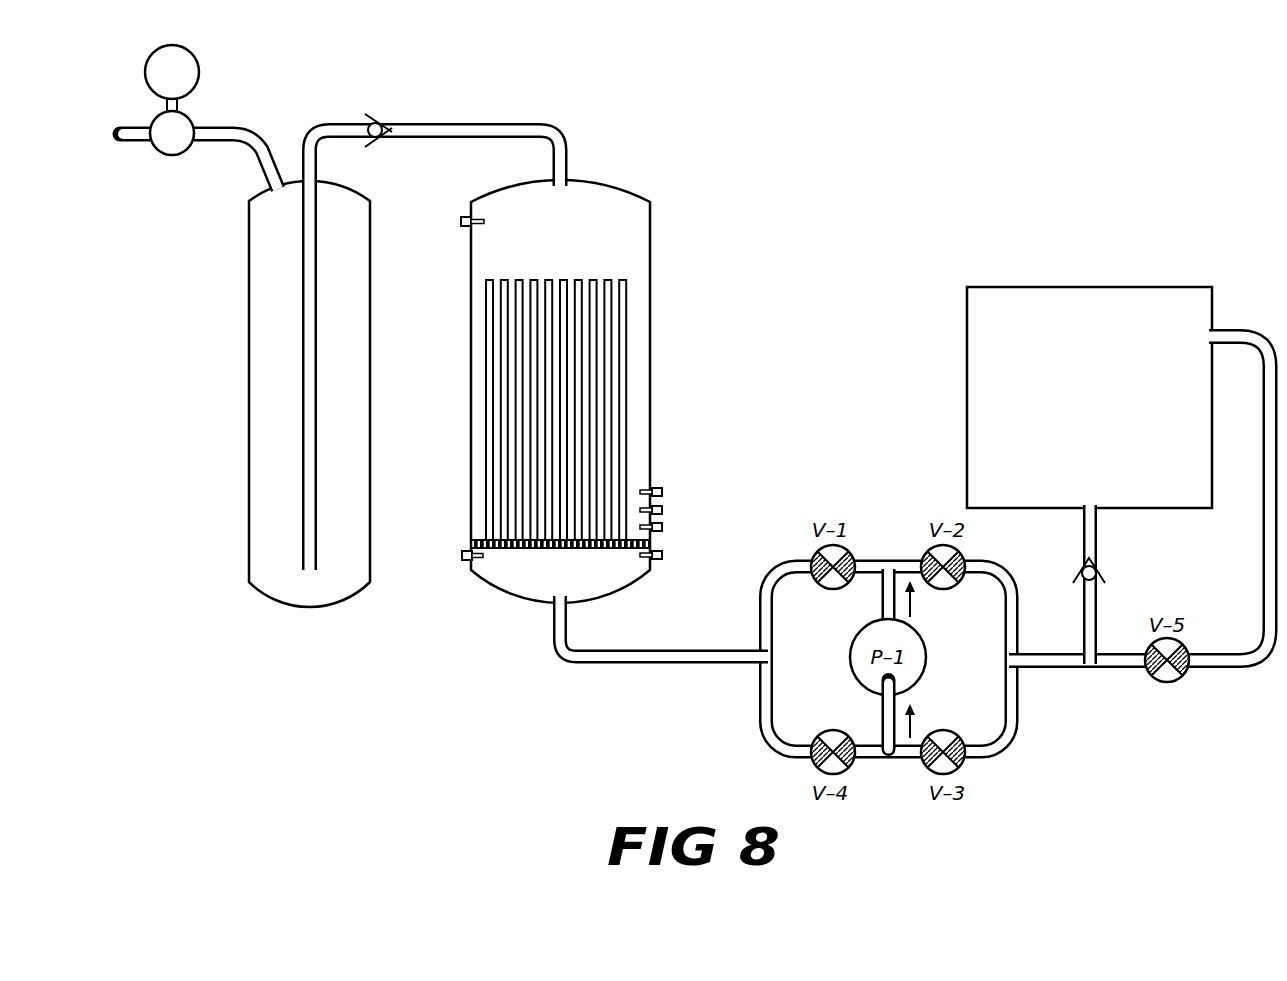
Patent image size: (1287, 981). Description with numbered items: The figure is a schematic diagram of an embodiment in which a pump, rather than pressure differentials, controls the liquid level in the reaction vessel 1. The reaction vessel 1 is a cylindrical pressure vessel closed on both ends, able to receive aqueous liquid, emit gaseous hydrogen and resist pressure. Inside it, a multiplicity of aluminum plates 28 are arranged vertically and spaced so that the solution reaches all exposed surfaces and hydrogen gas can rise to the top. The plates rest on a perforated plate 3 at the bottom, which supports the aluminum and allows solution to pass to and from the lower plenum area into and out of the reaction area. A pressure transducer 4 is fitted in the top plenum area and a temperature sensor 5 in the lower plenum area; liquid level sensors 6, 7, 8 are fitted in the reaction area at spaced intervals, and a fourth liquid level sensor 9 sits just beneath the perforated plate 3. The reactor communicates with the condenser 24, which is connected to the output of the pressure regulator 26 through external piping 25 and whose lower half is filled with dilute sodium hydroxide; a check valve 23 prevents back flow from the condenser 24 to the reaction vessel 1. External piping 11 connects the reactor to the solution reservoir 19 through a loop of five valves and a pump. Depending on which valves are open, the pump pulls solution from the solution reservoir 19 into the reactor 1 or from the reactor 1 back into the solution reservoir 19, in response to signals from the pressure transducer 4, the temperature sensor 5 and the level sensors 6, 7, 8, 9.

The reaction vessel 1 is at (601, 195).
The perforated plate 3 is at (541, 550).
The pressure transducer 4 is at (462, 218).
The temperature sensor 5 is at (464, 560).
The liquid level sensor 6 is at (663, 490).
The liquid level sensor 7 is at (663, 508).
The liquid level sensor 8 is at (662, 529).
The fourth liquid level sensor 9 is at (662, 556).
The external piping 11 is at (616, 664).
The solution reservoir 19 is at (1070, 403).
The check valve 23 is at (380, 121).
The condenser 24 is at (249, 272).
The external piping 25 is at (250, 131).
The pressure regulator 26 is at (193, 113).
The aluminum plates 28 is at (635, 383).